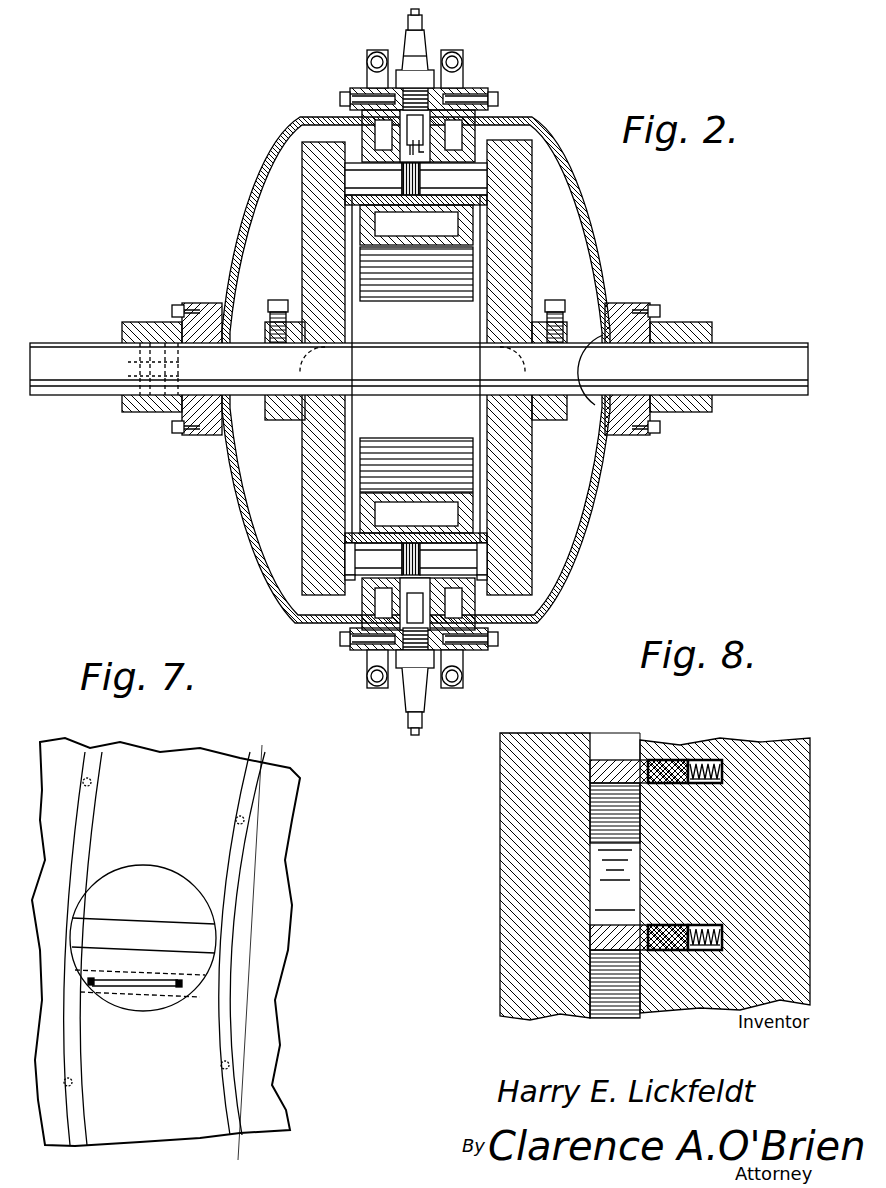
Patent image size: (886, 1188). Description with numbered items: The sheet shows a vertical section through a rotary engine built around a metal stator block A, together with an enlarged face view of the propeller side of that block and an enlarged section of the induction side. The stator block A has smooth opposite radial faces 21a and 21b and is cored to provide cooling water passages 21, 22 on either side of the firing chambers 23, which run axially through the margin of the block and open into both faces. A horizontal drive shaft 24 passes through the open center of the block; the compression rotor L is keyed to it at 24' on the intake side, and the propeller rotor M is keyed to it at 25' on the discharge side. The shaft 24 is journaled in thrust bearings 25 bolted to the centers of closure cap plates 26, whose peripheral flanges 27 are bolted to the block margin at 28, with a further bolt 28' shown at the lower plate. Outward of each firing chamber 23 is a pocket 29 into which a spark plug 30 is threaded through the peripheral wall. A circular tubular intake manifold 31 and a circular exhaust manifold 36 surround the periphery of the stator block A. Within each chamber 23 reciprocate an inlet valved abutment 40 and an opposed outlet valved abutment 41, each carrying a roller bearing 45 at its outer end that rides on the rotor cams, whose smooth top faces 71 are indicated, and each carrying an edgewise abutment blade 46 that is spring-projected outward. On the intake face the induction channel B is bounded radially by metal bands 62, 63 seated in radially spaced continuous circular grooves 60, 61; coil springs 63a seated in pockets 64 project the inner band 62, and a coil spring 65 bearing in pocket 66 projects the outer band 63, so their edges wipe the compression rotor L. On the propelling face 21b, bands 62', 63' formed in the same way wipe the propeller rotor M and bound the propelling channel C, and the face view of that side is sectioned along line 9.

In FIG. 2, the cooling water passage 21 is at (400, 270).
In FIG. 2, the smooth face of stator block 21a is at (352, 220).
In FIG. 8, the smooth face of stator block 21a is at (590, 836).
In FIG. 2, the propelling face of stator block 21b is at (478, 222).
In FIG. 7, the propelling face of stator block 21b is at (274, 894).
In FIG. 2, the cooling water passage 22 is at (375, 133).
In FIG. 2, the firing chamber 23 is at (428, 210).
In FIG. 2, the drive shaft 24 is at (419, 350).
In FIG. 2, the key 24' is at (280, 381).
In FIG. 2, the thrust bearing 25 is at (417, 355).
In FIG. 2, the key 25' is at (551, 379).
In FIG. 2, the closure cap plate 26 is at (608, 522).
In FIG. 2, the peripheral flange 27 is at (367, 78).
In FIG. 2, the bolt 28 is at (405, 360).
In FIG. 2, the mounting plate bolt 28' is at (515, 648).
In FIG. 2, the pocket 29 is at (394, 88).
In FIG. 2, the spark plug 30 is at (420, 45).
In FIG. 2, the intake manifold 31 is at (368, 55).
In FIG. 2, the exhaust manifold 36 is at (462, 56).
In FIG. 2, the inlet valved abutment 40 is at (382, 369).
In FIG. 7, the inlet valved abutment 40 is at (150, 892).
In FIG. 2, the outlet valved abutment 41 is at (453, 369).
In FIG. 7, the roller bearing 45 is at (155, 988).
In FIG. 7, the abutment blade 46 is at (143, 935).
In FIG. 8, the circular groove 60 is at (706, 950).
In FIG. 8, the circular groove 61 is at (698, 760).
In FIG. 2, the band 62 is at (306, 533).
In FIG. 7, the band 62 is at (246, 943).
In FIG. 8, the band 62 is at (619, 993).
In FIG. 2, the band 62' is at (523, 525).
In FIG. 2, the band 63 is at (425, 603).
In FIG. 8, the band 63 is at (619, 742).
In FIG. 7, the band 63' is at (93, 948).
In FIG. 7, the coil spring 63a is at (234, 815).
In FIG. 8, the coil spring 63a is at (700, 955).
In FIG. 8, the pocket 64 is at (640, 960).
In FIG. 7, the coil spring 65 is at (92, 783).
In FIG. 8, the coil spring 65 is at (708, 760).
In FIG. 8, the pocket 66 is at (660, 760).
In FIG. 2, the smooth top face of cam 71 is at (470, 178).
In FIG. 7, the section line 9 is at (252, 952).
In FIG. 2, the stator block A is at (500, 268).
In FIG. 7, the stator block A is at (276, 1012).
In FIG. 8, the stator block A is at (758, 748).
In FIG. 2, the induction channel B is at (345, 185).
In FIG. 8, the induction channel B is at (615, 846).
In FIG. 2, the propelling channel C is at (487, 192).
In FIG. 7, the propelling channel C is at (136, 1118).
In FIG. 2, the compression rotor L is at (315, 246).
In FIG. 8, the compression rotor L is at (510, 874).
In FIG. 2, the propeller rotor M is at (520, 234).